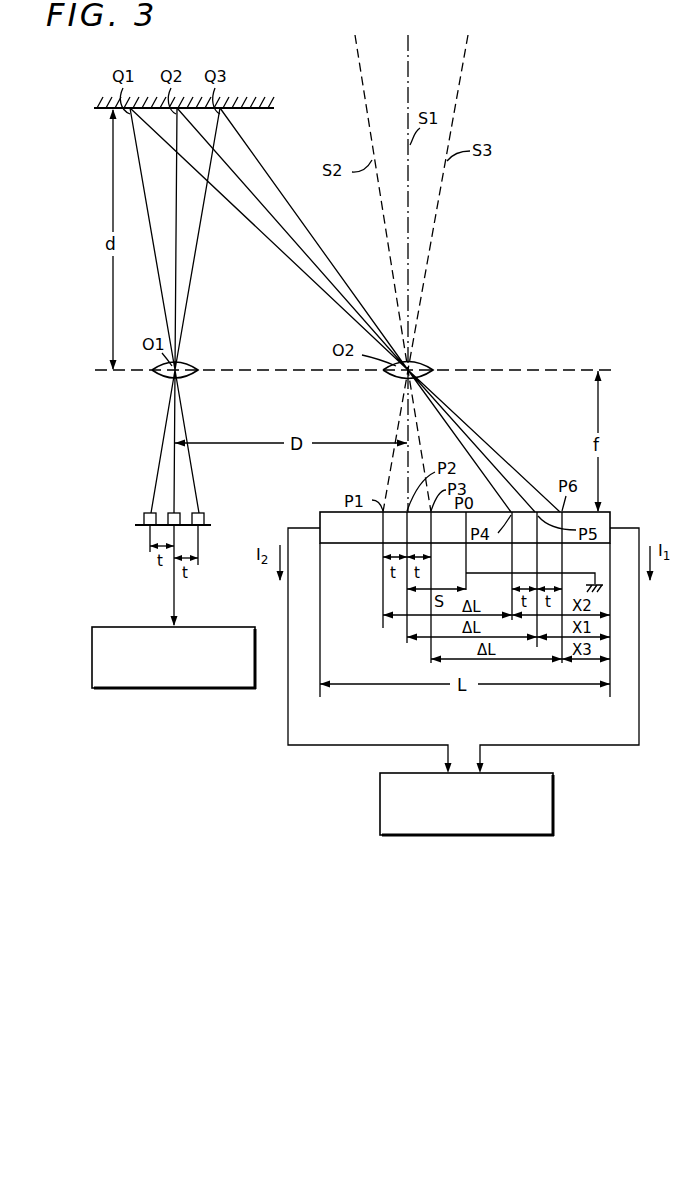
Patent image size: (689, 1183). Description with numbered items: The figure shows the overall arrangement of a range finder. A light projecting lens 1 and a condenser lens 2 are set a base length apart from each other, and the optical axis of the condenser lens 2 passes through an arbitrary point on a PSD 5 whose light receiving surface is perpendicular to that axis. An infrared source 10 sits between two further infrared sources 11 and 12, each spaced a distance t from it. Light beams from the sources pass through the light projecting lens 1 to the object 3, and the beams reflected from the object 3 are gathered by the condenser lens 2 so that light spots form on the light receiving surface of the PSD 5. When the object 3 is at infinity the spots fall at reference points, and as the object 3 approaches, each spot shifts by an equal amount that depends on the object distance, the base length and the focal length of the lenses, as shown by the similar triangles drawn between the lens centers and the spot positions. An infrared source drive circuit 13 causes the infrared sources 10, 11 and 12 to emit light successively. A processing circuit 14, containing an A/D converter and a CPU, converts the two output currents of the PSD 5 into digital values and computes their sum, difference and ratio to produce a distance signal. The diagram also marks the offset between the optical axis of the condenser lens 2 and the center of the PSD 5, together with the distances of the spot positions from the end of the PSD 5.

The light projecting lens 1 is at (197, 363).
The condenser lens 2 is at (432, 364).
The object 3 is at (274, 108).
The PSD 5 is at (612, 515).
The infrared source 10 is at (181, 513).
The infrared source 11 is at (144, 512).
The infrared source 12 is at (205, 513).
The infrared source drive circuit 13 is at (218, 627).
The processing circuit 14 is at (555, 808).